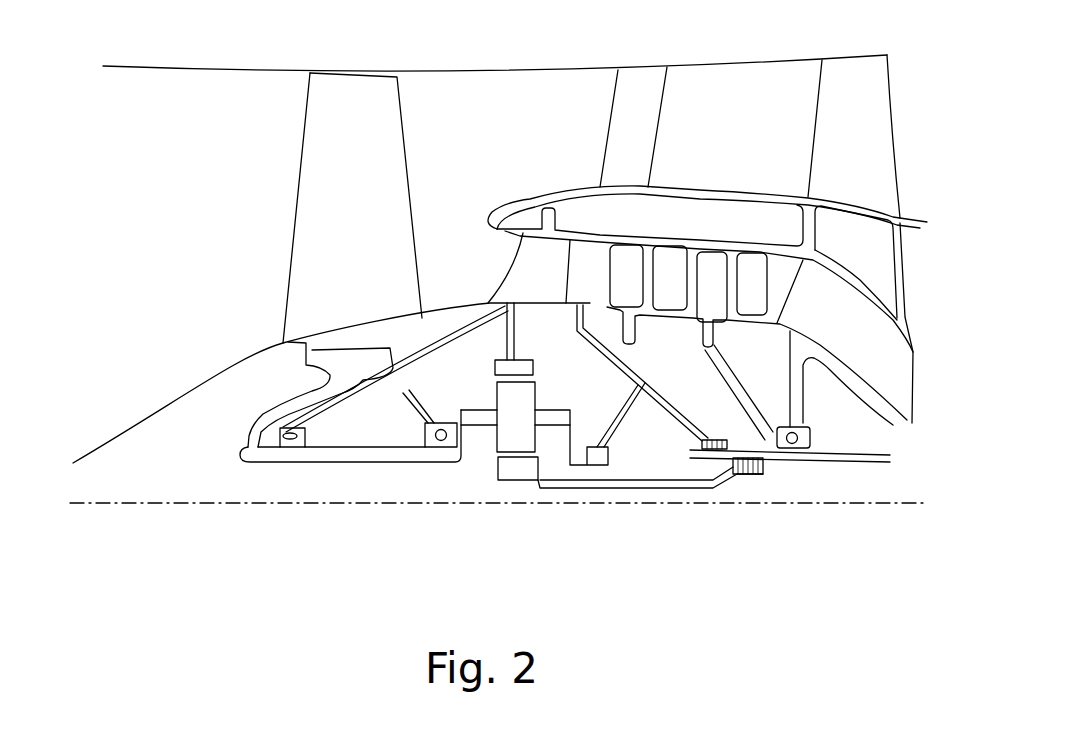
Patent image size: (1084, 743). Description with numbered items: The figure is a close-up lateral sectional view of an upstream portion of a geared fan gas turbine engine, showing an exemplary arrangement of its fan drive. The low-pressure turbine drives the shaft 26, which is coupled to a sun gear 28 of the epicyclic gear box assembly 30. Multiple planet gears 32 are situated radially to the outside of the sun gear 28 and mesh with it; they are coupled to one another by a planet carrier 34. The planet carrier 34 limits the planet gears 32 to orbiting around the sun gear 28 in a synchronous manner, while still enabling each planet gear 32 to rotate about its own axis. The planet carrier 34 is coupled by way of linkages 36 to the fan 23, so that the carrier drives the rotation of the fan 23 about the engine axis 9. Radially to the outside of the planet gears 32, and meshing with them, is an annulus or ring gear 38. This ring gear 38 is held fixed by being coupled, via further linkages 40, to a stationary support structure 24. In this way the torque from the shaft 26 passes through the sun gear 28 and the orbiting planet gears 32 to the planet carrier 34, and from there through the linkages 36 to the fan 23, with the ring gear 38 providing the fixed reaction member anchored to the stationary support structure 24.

The engine axis 9 is at (272, 503).
The fan 23 is at (313, 212).
The stationary support structure 24 is at (523, 267).
The shaft 26 is at (675, 480).
The sun gear 28 is at (517, 468).
The epicyclic gear box assembly 30 is at (470, 479).
The planet gears 32 is at (498, 438).
The planet carrier 34 is at (558, 457).
The linkages 36 is at (497, 437).
The annulus or ring gear 38 is at (497, 367).
The linkages 40 is at (518, 345).